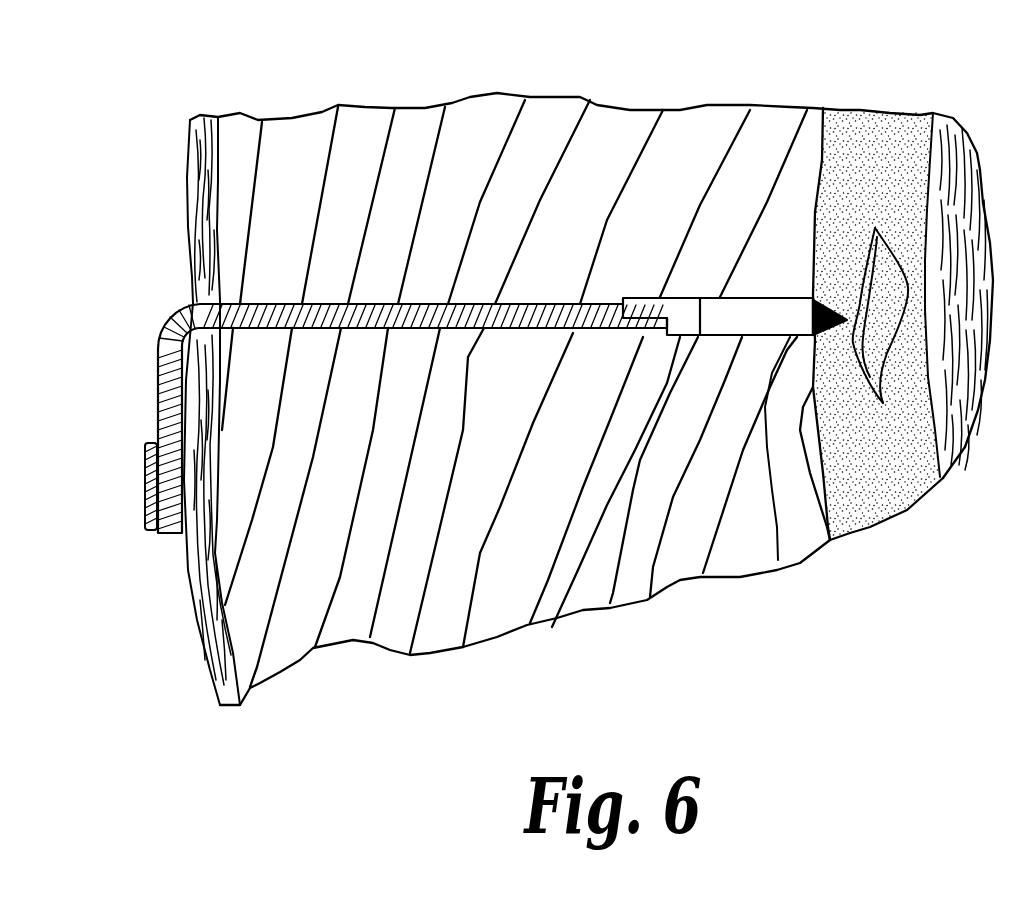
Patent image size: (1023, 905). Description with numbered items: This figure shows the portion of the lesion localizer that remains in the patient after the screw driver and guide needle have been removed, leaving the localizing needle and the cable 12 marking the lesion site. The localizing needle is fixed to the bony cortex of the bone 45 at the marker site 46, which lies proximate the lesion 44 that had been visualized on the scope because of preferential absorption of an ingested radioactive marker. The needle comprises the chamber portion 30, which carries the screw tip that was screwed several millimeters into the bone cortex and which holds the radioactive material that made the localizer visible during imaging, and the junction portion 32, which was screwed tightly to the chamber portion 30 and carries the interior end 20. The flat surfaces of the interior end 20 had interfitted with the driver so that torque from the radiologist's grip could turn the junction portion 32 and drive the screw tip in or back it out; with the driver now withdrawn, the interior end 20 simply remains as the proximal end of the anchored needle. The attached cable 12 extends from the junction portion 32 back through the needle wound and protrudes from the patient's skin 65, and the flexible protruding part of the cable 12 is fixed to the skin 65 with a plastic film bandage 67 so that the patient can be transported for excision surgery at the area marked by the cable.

The cable 12 is at (167, 387).
The interior end 20 is at (640, 320).
The chamber portion 30 is at (777, 312).
The junction portion 32 is at (552, 627).
The lesion 44 is at (853, 343).
The bone 45 is at (872, 156).
The marker site 46 is at (778, 560).
The skin 65 is at (203, 193).
The plastic film bandage 67 is at (150, 493).